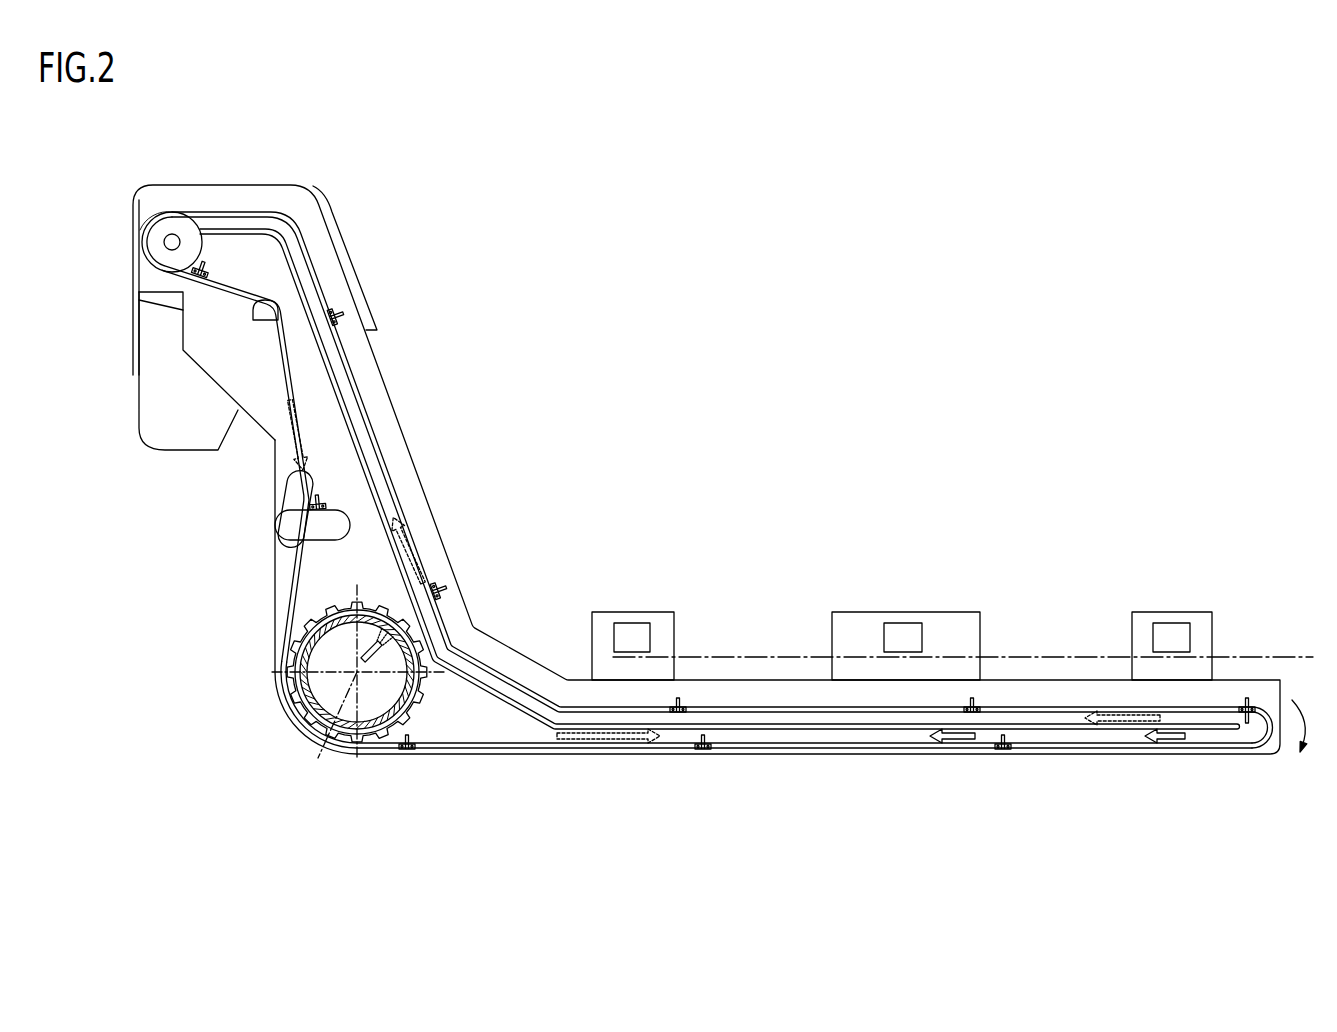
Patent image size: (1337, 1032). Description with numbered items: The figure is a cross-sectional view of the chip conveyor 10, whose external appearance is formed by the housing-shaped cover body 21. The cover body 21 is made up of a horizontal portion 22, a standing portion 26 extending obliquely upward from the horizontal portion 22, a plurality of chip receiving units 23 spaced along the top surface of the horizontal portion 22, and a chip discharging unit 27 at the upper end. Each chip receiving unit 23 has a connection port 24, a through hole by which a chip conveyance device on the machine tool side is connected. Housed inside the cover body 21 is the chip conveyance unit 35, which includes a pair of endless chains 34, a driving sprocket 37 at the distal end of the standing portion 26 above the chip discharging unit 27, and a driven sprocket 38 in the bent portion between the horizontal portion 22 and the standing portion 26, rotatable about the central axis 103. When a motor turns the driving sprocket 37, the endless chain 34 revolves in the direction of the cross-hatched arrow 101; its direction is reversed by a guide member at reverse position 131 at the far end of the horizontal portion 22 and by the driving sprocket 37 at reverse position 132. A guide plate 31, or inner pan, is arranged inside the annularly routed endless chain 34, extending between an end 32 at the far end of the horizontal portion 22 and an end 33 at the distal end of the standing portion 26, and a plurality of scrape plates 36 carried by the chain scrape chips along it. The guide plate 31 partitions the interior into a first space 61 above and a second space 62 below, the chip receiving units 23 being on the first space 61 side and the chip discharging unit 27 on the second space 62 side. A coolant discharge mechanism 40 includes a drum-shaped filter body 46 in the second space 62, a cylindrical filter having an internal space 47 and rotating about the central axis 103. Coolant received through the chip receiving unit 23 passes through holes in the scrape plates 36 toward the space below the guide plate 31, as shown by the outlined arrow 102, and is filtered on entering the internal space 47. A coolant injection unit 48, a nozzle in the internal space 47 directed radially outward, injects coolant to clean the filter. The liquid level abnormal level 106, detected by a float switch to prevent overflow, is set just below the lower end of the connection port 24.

The chip conveyor 10 is at (1048, 260).
The cover body 21 is at (124, 270).
The horizontal portion 22 is at (849, 679).
The chip receiving unit 23 is at (590, 630).
The connection port 24 is at (650, 638).
The standing portion 26 is at (403, 425).
The chip discharging unit 27 is at (167, 451).
The guide plate 31 is at (738, 723).
The end 32 is at (1255, 732).
The end 33 is at (196, 219).
The endless chain 34 is at (785, 703).
The chip conveyance unit 35 is at (150, 207).
The scrape plate 36 is at (190, 272).
The driving sprocket 37 is at (172, 232).
The driven sprocket 38 is at (300, 613).
The coolant discharge mechanism 40 is at (313, 617).
The drum-shaped filter body 46 is at (298, 700).
The internal space 47 is at (335, 663).
The coolant injection unit 48 is at (375, 660).
The first space 61 is at (530, 670).
The second space 62 is at (490, 703).
The arrow 101 is at (410, 547).
The arrow 102 is at (950, 744).
The central axis 103 is at (330, 733).
The liquid level abnormal level 106 is at (1282, 655).
The reverse position 131 is at (1264, 745).
The reverse position 132 is at (142, 240).